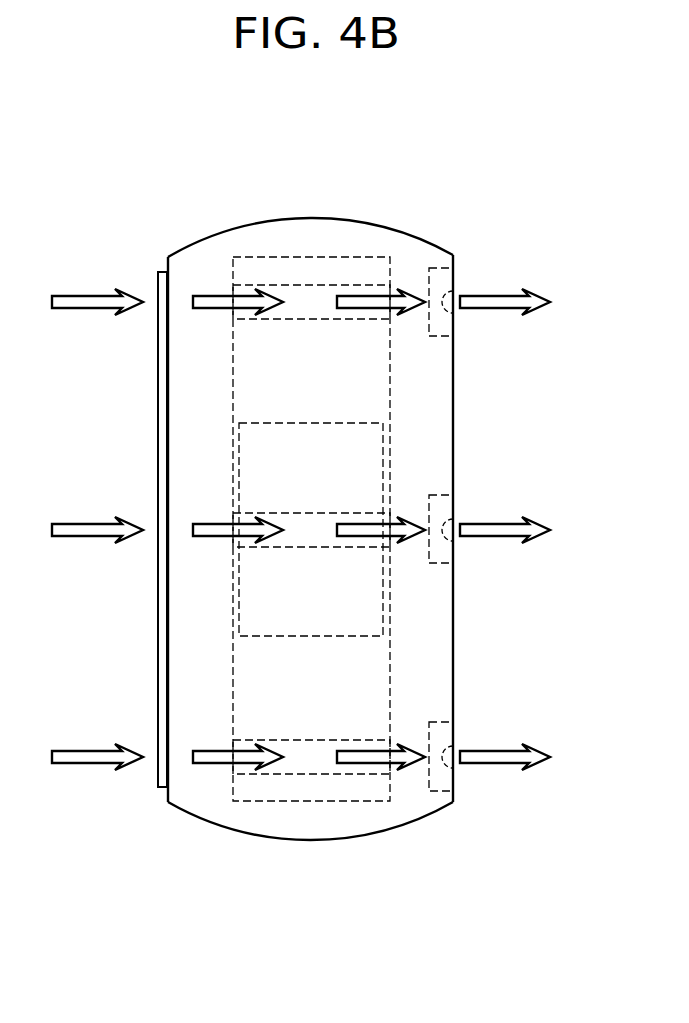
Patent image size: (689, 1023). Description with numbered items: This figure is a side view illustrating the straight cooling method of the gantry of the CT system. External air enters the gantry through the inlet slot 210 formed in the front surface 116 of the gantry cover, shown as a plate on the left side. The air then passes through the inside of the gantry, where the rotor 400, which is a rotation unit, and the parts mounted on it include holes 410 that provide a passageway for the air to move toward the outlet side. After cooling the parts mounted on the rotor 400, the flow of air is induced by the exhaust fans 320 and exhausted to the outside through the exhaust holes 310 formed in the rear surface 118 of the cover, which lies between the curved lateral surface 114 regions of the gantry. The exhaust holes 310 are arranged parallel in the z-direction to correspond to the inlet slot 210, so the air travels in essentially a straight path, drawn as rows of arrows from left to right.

The lateral surface 114 is at (203, 278).
The front surface 116 is at (160, 370).
The rear surface 118 is at (430, 425).
The inlet slot 210 is at (166, 268).
The exhaust holes 310 is at (445, 292).
The exhaust fans 320 is at (439, 336).
The rotor 400 is at (370, 373).
The holes 410 is at (291, 286).